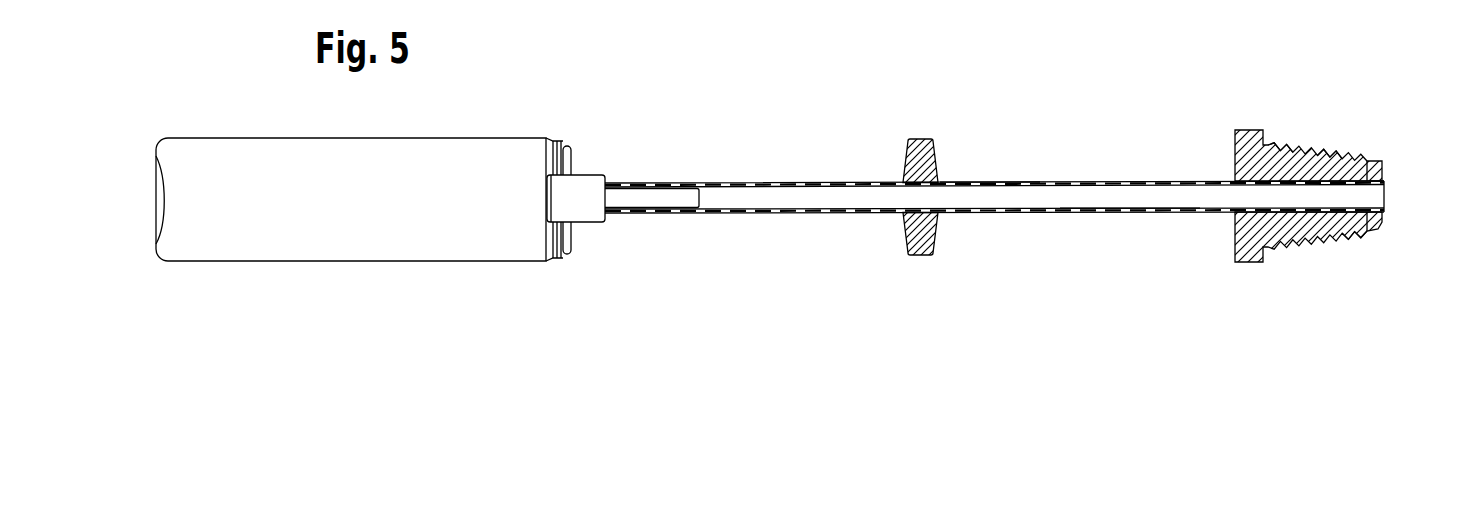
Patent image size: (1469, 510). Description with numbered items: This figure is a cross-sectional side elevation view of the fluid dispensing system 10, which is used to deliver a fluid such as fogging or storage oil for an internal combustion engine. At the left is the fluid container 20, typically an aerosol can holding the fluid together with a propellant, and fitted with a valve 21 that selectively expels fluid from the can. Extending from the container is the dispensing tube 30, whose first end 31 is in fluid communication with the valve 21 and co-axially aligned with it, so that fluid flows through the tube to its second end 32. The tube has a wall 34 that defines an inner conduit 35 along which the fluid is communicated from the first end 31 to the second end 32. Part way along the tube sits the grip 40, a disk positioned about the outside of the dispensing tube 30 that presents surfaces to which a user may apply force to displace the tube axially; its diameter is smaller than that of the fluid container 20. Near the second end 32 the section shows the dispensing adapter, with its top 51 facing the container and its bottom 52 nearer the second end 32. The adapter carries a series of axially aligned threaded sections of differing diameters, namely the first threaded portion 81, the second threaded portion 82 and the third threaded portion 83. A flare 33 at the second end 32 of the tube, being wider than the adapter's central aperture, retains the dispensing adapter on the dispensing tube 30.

The dispensing system 10 is at (599, 287).
The fluid container 20 is at (204, 155).
The valve 21 is at (652, 197).
The dispensing tube 30 is at (1009, 222).
The first end 31 is at (606, 223).
The second end 32 is at (1378, 232).
The flare 33 is at (1386, 180).
The wall 34 is at (985, 181).
The inner conduit 35 is at (1085, 193).
The grip 40 is at (920, 246).
The top 51 is at (1234, 240).
The bottom 52 is at (1369, 157).
The first threaded portion 81 is at (1358, 234).
The second threaded portion 82 is at (1330, 150).
The third threaded portion 83 is at (1287, 142).